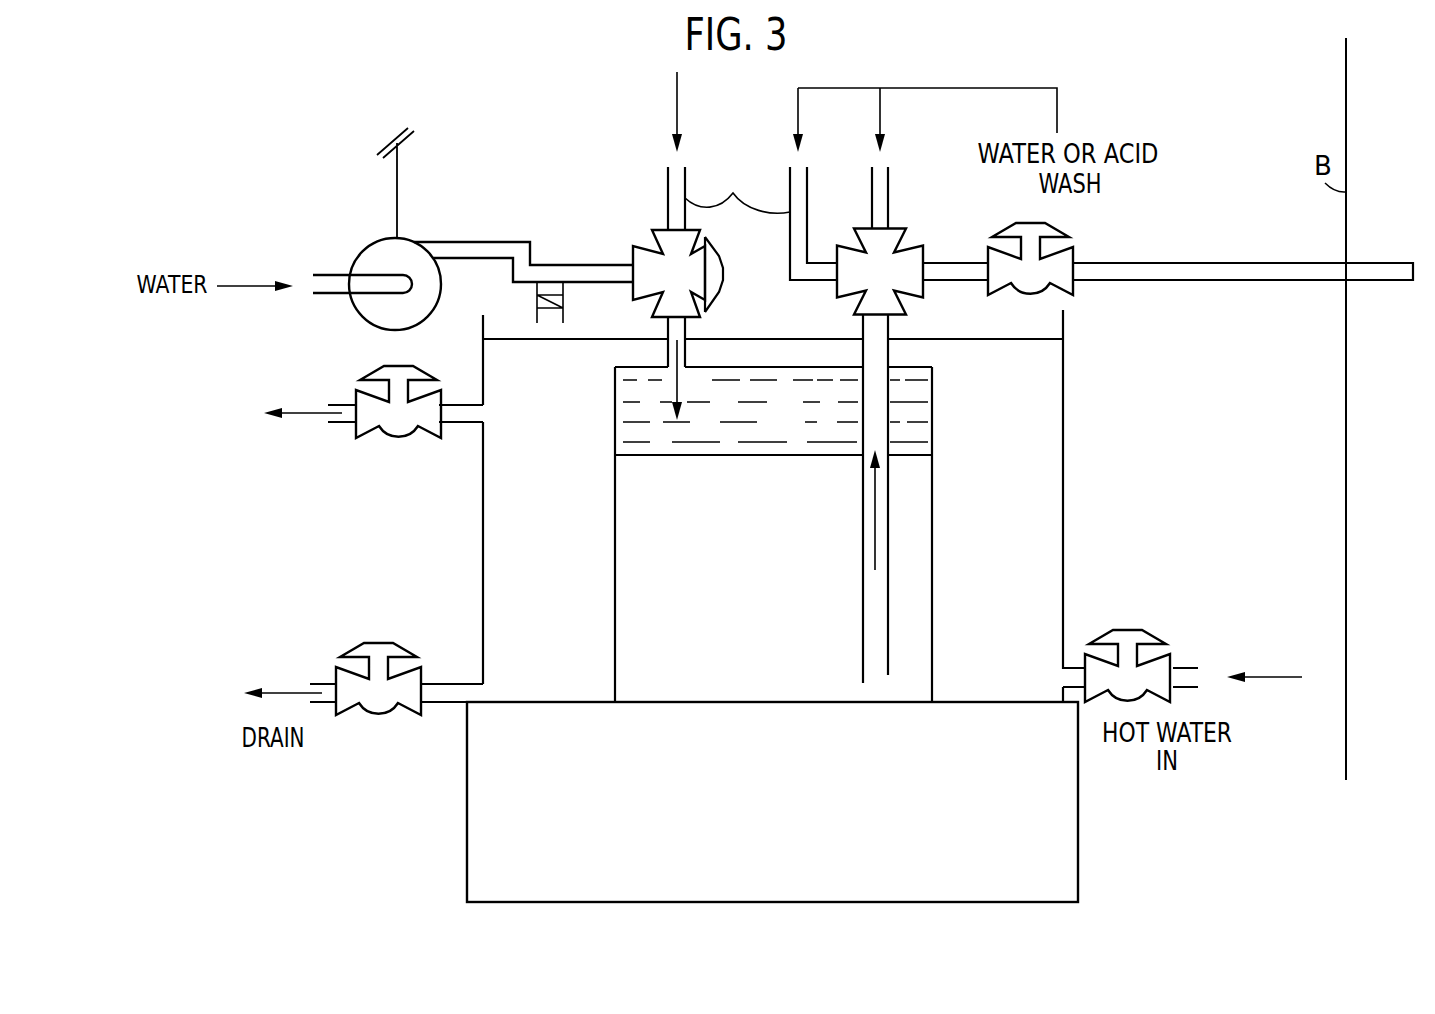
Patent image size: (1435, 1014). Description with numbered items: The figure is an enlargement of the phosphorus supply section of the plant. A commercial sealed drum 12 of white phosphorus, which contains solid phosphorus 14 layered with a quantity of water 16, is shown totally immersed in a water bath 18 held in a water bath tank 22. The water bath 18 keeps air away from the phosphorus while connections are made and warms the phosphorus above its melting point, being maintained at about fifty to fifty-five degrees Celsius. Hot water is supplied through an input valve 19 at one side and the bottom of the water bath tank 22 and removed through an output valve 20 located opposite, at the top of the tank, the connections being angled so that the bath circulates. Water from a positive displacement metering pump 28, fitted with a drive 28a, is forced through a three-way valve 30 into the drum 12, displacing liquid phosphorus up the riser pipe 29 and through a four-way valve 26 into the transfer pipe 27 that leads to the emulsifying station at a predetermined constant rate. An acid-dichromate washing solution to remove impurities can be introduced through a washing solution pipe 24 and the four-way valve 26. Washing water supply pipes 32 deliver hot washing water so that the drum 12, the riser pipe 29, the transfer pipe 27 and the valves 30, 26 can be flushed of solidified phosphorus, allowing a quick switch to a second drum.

The sealed drum 12 is at (932, 580).
The solid phosphorus 14 is at (723, 590).
The water 16 is at (770, 430).
The water bath 18 is at (1050, 573).
The input valve 19 is at (1143, 630).
The output valve 20 is at (395, 441).
The water bath tank 22 is at (1063, 490).
The washing solution pipe 24 is at (888, 197).
The four-way valve 26 is at (923, 258).
The transfer pipe 27 is at (1243, 282).
The positive displacement metering pump 28 is at (378, 243).
The pump drive shaft 28a is at (397, 188).
The riser pipe 29 is at (887, 565).
The three-way valve 30 is at (656, 256).
The washing water supply pipes 32 is at (737, 188).